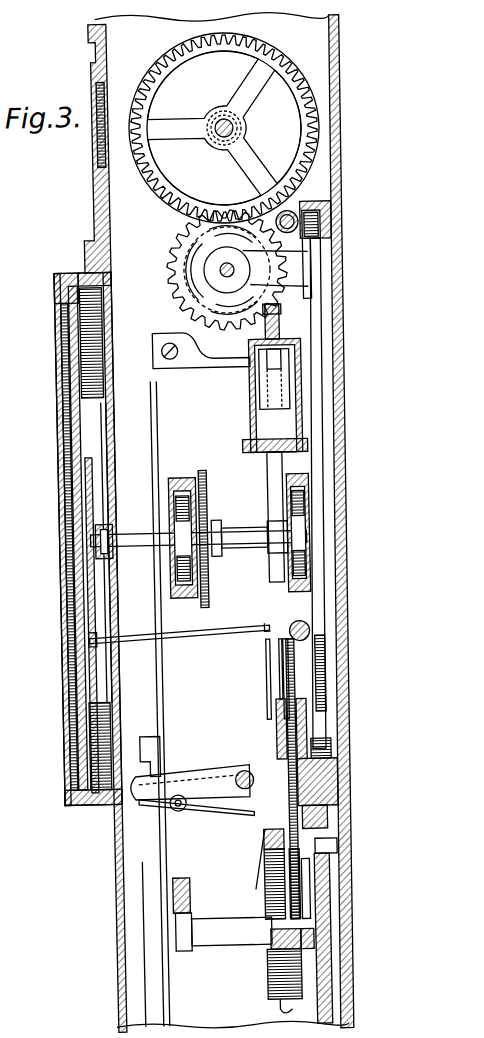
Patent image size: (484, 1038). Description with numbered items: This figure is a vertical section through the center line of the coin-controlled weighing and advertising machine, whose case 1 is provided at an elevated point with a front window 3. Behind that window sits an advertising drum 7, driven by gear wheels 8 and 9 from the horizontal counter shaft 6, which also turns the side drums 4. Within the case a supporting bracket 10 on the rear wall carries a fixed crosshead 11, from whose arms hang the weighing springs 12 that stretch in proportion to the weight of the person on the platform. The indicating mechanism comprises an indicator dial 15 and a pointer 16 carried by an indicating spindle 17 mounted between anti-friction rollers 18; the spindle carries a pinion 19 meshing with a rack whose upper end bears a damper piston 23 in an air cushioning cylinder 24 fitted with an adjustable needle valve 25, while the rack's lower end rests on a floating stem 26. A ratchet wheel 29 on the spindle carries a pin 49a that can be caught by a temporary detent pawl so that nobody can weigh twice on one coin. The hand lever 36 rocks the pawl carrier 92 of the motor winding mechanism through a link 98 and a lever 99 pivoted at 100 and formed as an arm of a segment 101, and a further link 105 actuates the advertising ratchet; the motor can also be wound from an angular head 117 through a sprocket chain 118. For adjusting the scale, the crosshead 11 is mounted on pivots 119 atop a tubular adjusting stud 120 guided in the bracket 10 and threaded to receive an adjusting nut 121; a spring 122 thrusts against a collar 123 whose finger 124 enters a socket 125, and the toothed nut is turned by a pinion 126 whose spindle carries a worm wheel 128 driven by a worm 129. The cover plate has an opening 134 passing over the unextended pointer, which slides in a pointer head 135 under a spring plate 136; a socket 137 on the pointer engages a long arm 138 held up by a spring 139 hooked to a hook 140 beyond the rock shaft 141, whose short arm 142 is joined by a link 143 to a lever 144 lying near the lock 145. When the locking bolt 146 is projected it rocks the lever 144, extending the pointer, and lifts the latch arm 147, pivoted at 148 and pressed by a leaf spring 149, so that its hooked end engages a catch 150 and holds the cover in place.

The case 1 is at (108, 903).
The front window 3 is at (95, 155).
The rotatable drums 4 is at (155, 378).
The horizontal counter shaft 6 is at (216, 270).
The drum 7 is at (268, 62).
The gear wheel 8 is at (158, 176).
The gear wheel 9 is at (170, 248).
The supporting bracket 10 is at (360, 784).
The fixed crosshead 11 is at (284, 705).
The weighing springs 12 is at (250, 975).
The indicator dial 15 is at (54, 770).
The indicating needle or pointer 16 is at (77, 598).
The indicating spindle 17 is at (198, 548).
The anti-friction rollers 18 is at (170, 500).
The pinion 19 is at (258, 548).
The piston 23 is at (262, 392).
The air cushioning cylinder 24 is at (250, 372).
The adjustable needle valve 25 is at (282, 320).
The floating stem 26 is at (268, 680).
The ratchet wheel 29 is at (200, 490).
The lever 36 is at (180, 886).
The pin 49a is at (203, 600).
The pawl carrier 92 is at (17, 420).
The link 98 is at (22, 706).
The lever 99 is at (27, 880).
The pivot 100 is at (30, 808).
The segment 101 is at (294, 882).
The link 105 is at (0, 468).
The angular head 117 is at (19, 198).
The sprocket chain 118 is at (20, 318).
The pivots 119 is at (250, 722).
The tubular adjusting stud 120 is at (325, 802).
The adjusting nut 121 is at (318, 432).
The spring 122 is at (262, 822).
The collar 123 is at (262, 850).
The laterally projecting finger 124 is at (314, 866).
The socket 125 is at (322, 846).
The pinion 126 is at (312, 765).
The worm wheel 128 is at (322, 224).
The worm 129 is at (292, 213).
The opening 134 is at (105, 680).
The pointer head 135 is at (95, 538).
The spring plate 136 is at (78, 478).
The socket 137 is at (85, 658).
The long arm 138 is at (166, 640).
The spring 139 is at (326, 642).
The hook 140 is at (330, 630).
The rock shaft 141 is at (289, 622).
The short arm 142 is at (258, 626).
The link 143 is at (255, 658).
The lever 144 is at (186, 813).
The lock 145 is at (125, 890).
The locking bolt 146 is at (100, 805).
The latch arm 147 is at (160, 775).
The pivot 148 is at (232, 770).
The leaf spring 149 is at (250, 897).
The catch 150 is at (132, 755).